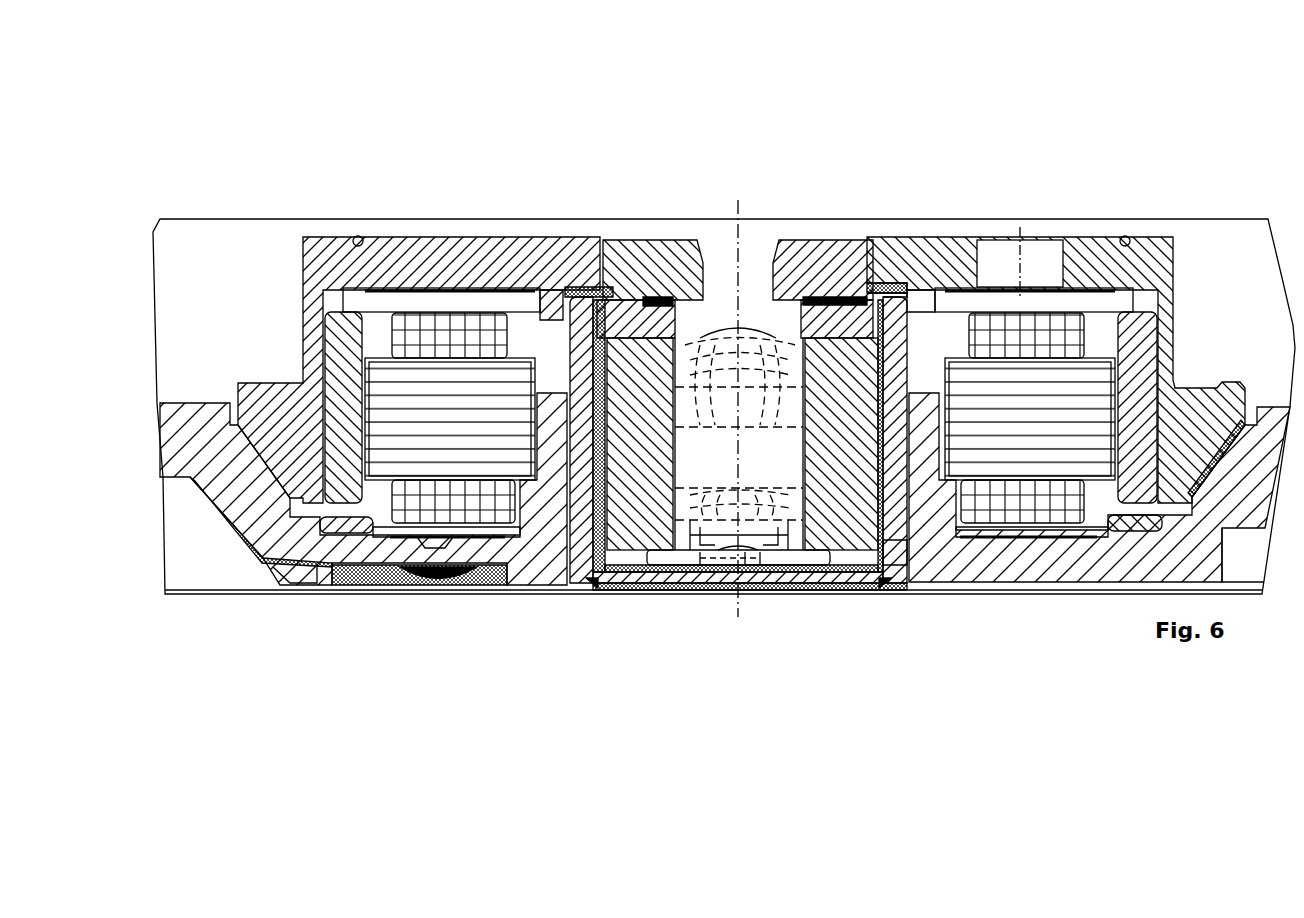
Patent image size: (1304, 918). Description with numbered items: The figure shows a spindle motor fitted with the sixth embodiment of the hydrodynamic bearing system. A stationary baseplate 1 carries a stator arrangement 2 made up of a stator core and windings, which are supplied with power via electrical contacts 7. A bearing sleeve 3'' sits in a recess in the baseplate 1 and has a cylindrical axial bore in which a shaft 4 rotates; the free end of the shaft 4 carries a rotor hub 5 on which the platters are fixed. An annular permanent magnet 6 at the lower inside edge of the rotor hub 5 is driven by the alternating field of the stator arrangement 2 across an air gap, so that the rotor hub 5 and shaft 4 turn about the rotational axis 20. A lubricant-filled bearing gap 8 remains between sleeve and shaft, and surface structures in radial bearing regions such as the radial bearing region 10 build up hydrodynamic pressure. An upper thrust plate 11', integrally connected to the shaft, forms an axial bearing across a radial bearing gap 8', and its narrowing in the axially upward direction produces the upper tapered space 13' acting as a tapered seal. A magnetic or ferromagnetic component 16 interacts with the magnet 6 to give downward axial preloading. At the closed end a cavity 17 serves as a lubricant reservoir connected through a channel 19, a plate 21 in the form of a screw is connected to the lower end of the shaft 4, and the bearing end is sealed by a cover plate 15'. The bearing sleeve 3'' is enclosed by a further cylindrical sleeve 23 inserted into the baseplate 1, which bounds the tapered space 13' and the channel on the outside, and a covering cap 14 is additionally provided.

The baseplate 1 is at (256, 560).
The stator arrangement 2 is at (443, 452).
The bearing sleeve 3'' is at (751, 558).
The shaft 4 is at (772, 483).
The rotor hub 5 is at (381, 250).
The annular permanent magnet 6 is at (337, 372).
The electrical contacts 7 is at (410, 573).
The bearing gap 8 is at (713, 578).
The radial bearing gap 8' is at (735, 187).
The radial bearing region 10 is at (810, 277).
The upper thrust plate 11' is at (897, 167).
The upper tapered space 13' is at (702, 177).
The covering cap 14 is at (913, 290).
The seal ring 15' is at (750, 701).
The permanently magnetic or ferromagnetic component 16 is at (330, 527).
The cavity 17 is at (723, 557).
The channel 19 is at (603, 587).
The rotational axis 20 is at (738, 200).
The plate 21 is at (707, 557).
The cylindrical sleeve 23 is at (897, 517).